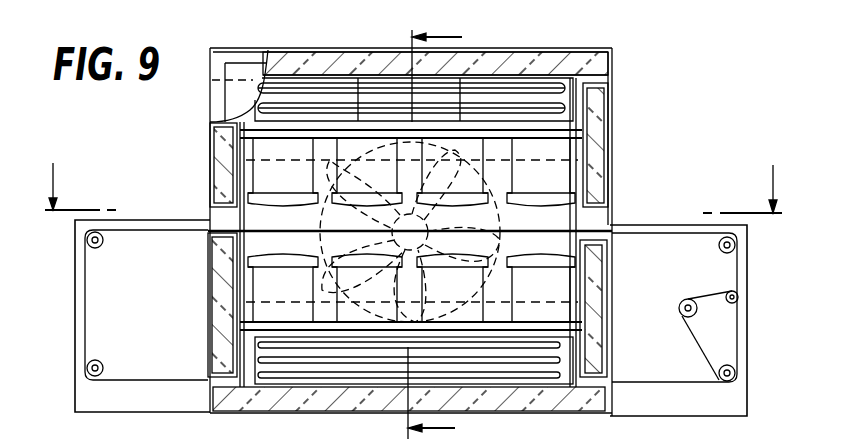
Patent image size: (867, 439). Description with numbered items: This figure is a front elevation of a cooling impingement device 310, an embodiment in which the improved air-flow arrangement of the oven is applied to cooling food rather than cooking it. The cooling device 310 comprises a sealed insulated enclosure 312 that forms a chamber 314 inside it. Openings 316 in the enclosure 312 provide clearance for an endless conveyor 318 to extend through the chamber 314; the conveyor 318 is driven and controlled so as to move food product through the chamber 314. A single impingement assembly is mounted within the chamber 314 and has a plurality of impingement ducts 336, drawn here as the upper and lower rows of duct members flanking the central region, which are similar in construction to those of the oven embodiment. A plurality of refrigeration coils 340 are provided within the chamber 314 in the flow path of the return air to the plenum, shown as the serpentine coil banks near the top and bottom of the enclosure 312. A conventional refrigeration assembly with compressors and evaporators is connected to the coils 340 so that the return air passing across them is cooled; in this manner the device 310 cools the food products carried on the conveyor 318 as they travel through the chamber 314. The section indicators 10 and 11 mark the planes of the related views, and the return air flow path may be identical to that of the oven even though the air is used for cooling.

The section line 10- 10 is at (413, 176).
The section line 11- 11 is at (448, 234).
The cooling device 310 is at (648, 96).
The sealed insulated enclosure 312 is at (209, 97).
The chamber 314 is at (600, 216).
The openings 316 is at (207, 233).
The endless conveyor 318 is at (85, 303).
The impingement ducts 336 is at (257, 170).
The refrigeration coils 340 is at (500, 96).